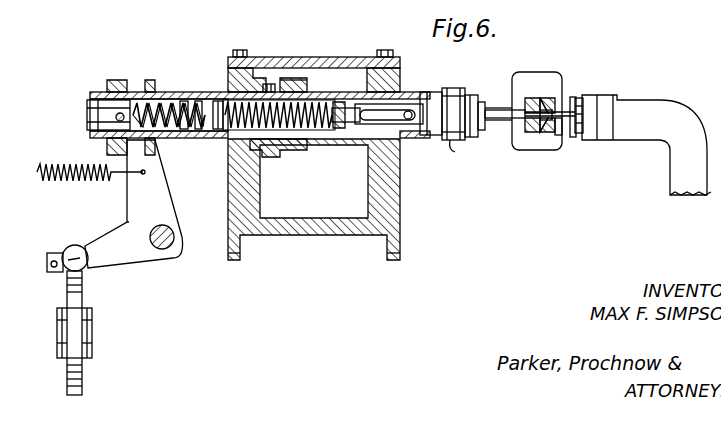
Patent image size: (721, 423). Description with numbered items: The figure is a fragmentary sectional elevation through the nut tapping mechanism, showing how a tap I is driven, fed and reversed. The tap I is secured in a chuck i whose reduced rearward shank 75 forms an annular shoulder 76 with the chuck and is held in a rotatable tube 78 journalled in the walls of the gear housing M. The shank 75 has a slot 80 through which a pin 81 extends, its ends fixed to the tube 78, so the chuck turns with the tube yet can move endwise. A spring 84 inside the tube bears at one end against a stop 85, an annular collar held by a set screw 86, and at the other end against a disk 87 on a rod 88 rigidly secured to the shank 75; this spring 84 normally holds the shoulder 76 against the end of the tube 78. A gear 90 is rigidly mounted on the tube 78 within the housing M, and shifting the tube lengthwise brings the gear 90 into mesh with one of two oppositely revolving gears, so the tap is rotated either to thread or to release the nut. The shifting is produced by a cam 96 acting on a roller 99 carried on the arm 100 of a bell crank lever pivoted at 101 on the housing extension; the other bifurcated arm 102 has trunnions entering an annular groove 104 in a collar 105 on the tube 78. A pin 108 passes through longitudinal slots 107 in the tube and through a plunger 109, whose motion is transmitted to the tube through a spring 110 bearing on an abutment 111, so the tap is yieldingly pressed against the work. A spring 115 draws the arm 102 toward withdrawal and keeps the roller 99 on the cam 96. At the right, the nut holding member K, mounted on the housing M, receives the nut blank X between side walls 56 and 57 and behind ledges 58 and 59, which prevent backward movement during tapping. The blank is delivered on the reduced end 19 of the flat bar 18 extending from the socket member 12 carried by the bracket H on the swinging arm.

The gear housing M is at (402, 185).
The rod 88 is at (222, 140).
The gear 90 is at (288, 79).
The chuck carrying tube 78 is at (344, 140).
The annular groove 104 is at (136, 92).
The collar 105 is at (117, 80).
The plunger 109 is at (88, 103).
The pin 108 is at (117, 118).
The longitudinal slots 107 is at (177, 97).
The spring 110 is at (213, 99).
The abutment 111 is at (195, 139).
The disk 87 is at (212, 139).
The spring 84 is at (315, 140).
The stop 85 is at (340, 102).
The set screw 86 is at (338, 102).
The slot 80 is at (393, 100).
The shank 75 is at (409, 111).
The annular shoulder 76 is at (420, 139).
The pin 81 is at (443, 93).
The chuck i is at (455, 143).
The tap I is at (494, 104).
The nut holding and positioning member K is at (556, 72).
The side wall 56 is at (540, 98).
The side wall 57 is at (535, 132).
The nut blank X is at (541, 98).
The reduced end 19 is at (541, 132).
The flat bar 18 is at (562, 133).
The ledge 59 is at (552, 134).
The ledge 58 is at (573, 97).
The socket member 12 is at (581, 97).
The bracket H is at (598, 94).
The arm 100 is at (125, 258).
The arm 102 is at (146, 200).
The pivot 101 is at (170, 247).
The roller 99 is at (70, 250).
The cam 96 is at (76, 297).
The spring 115 is at (43, 182).